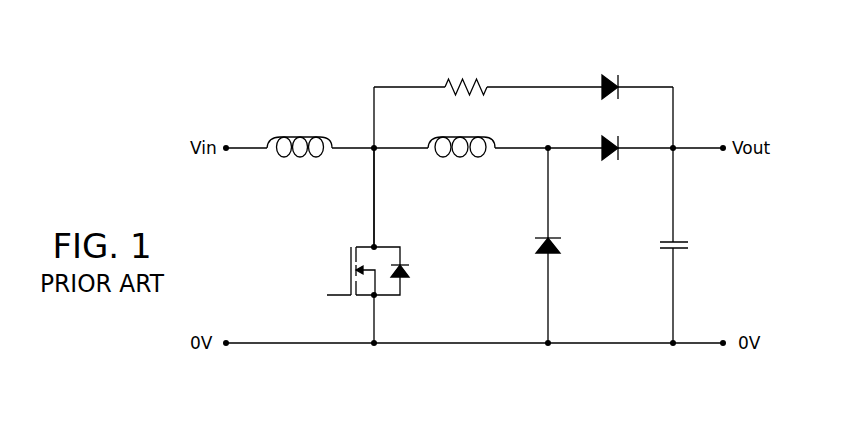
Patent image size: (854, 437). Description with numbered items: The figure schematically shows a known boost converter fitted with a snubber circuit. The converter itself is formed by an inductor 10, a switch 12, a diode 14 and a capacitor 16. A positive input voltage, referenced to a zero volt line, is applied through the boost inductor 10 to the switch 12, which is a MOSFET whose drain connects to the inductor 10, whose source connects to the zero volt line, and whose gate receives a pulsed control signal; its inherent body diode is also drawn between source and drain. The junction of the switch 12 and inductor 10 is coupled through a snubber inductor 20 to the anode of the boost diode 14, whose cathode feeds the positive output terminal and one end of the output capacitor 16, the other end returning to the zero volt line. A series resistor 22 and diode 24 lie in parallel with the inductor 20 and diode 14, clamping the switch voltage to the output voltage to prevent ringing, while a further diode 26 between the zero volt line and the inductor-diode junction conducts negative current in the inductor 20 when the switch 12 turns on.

The inductor 10 is at (300, 160).
The switch 12 is at (338, 265).
The diode 14 is at (612, 160).
The capacitor 16 is at (657, 243).
The inductor 20 is at (462, 160).
The resistor 22 is at (460, 74).
The diode 24 is at (612, 73).
The diode 26 is at (533, 242).